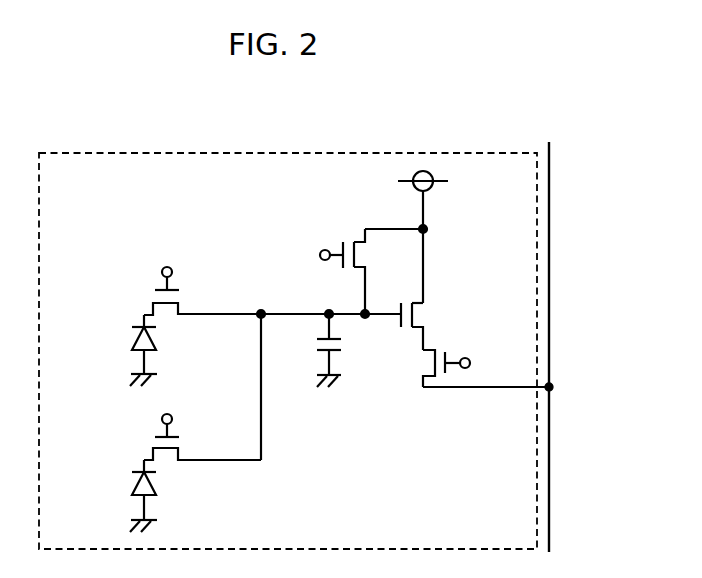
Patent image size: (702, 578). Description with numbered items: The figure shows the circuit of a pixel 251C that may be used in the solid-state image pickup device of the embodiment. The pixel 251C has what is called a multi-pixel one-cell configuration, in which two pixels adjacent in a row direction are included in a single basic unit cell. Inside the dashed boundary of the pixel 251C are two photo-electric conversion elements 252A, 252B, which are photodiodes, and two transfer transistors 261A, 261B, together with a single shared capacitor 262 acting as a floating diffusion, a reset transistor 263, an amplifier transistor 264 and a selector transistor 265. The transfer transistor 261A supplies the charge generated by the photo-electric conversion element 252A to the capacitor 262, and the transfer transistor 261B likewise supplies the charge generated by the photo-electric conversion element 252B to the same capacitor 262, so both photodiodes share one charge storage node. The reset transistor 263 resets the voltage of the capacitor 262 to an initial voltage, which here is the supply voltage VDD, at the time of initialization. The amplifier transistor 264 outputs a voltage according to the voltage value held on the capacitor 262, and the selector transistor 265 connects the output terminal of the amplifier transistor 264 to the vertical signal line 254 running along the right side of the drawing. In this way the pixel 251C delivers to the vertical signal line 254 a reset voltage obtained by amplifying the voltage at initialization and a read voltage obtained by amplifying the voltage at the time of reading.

The pixel 251C is at (87, 152).
The photo-electric conversion element 252A is at (135, 340).
The photo-electric conversion element 252B is at (135, 485).
The vertical signal line 254 is at (549, 248).
The transfer transistor 261A is at (182, 295).
The transfer transistor 261B is at (180, 444).
The capacitor 262 is at (340, 345).
The reset transistor 263 is at (348, 238).
The amplifier transistor 264 is at (423, 312).
The selector transistor 265 is at (423, 362).